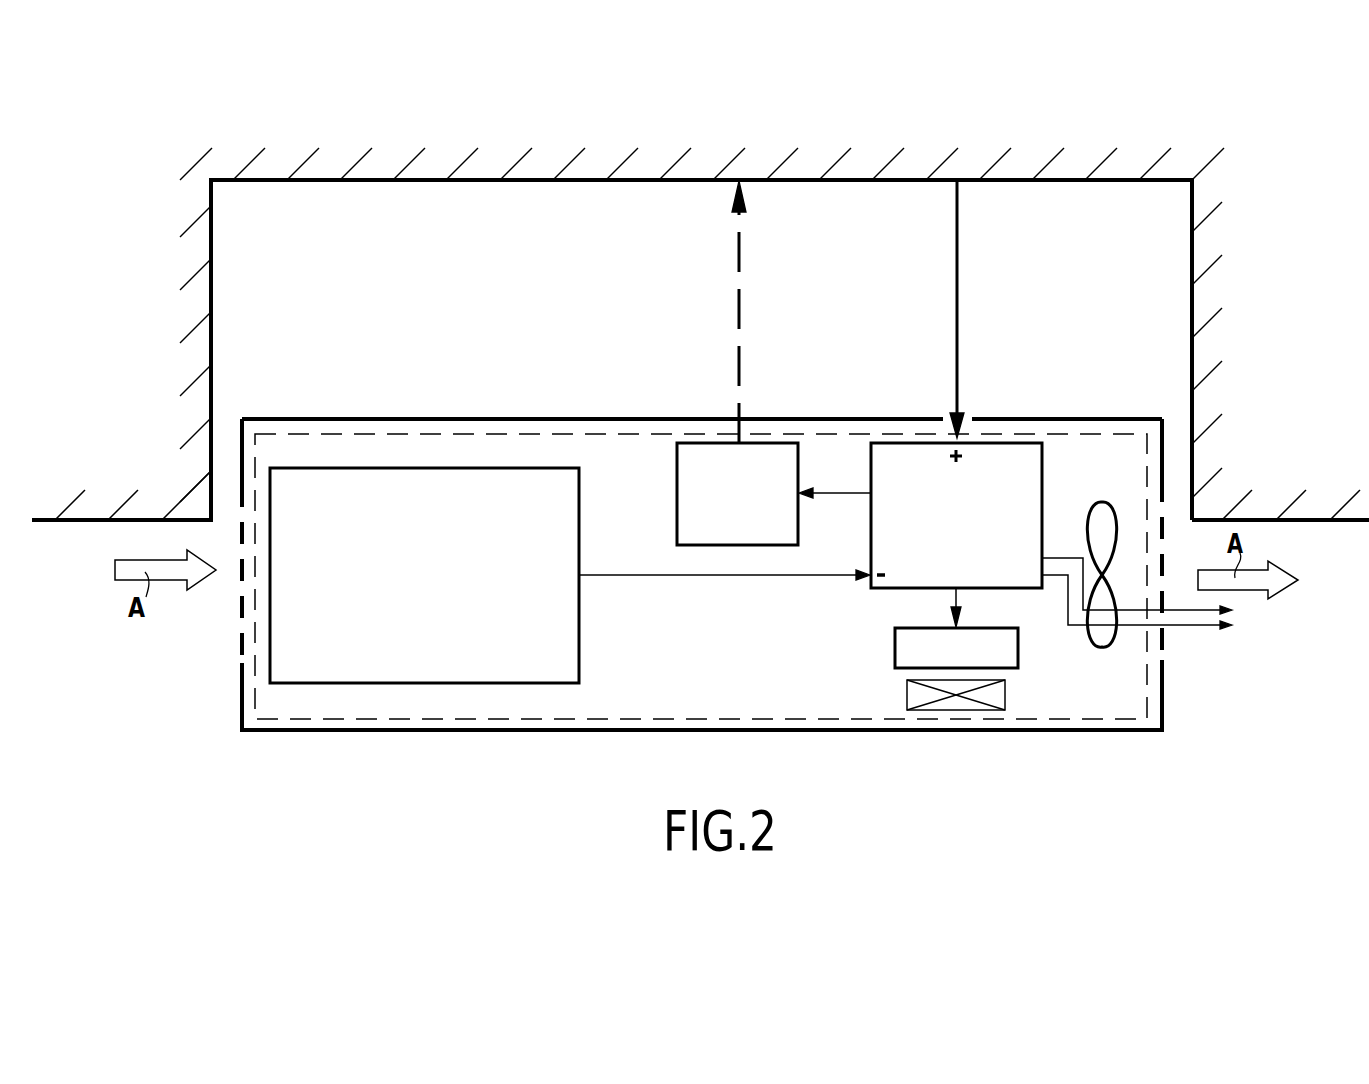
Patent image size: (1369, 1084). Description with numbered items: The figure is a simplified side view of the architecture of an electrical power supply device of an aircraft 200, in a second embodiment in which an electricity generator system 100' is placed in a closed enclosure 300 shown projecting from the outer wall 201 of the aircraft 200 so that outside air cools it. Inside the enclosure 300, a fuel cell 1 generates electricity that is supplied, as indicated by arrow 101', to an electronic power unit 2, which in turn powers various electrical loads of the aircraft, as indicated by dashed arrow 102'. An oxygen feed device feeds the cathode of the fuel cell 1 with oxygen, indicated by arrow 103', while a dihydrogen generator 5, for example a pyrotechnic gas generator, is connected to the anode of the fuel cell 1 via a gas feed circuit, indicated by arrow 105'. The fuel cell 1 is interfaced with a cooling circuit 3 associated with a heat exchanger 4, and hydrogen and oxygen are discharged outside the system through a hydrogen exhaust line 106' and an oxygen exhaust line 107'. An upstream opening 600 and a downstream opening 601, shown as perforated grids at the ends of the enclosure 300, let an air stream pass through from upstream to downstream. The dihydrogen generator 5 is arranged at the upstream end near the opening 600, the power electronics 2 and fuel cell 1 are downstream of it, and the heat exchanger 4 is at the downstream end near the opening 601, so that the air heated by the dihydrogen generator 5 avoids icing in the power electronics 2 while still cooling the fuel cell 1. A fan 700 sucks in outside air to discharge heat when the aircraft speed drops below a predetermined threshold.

The fuel cell 1 is at (958, 522).
The electronic power unit 2 is at (746, 505).
The cooling circuit 3 is at (964, 661).
The heat exchanger 4 is at (998, 697).
The dihydrogen generator 5 is at (431, 597).
The electricity generator system 100' is at (701, 576).
The arrow indicating electricity supply 101' is at (835, 472).
The dashed arrow indicating power to loads 102' is at (773, 312).
The arrow indicating oxygen feed 103' is at (991, 309).
The arrow indicating dihydrogen feed 105' is at (724, 598).
The hydrogen exhaust line 106' is at (1137, 555).
The oxygen exhaust line 107' is at (1136, 620).
The aircraft 200 is at (1313, 483).
The outer wall 201 is at (1350, 523).
The enclosure 300 is at (1088, 732).
The upstream opening 600 is at (241, 640).
The downstream opening 601 is at (1162, 643).
The fan 700 is at (1098, 520).